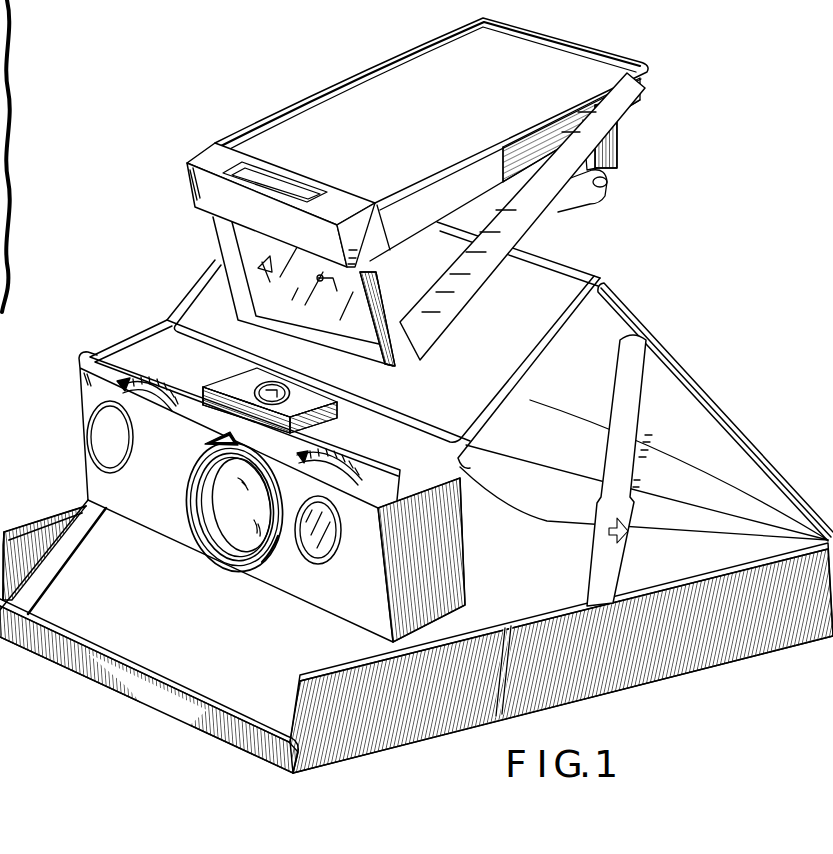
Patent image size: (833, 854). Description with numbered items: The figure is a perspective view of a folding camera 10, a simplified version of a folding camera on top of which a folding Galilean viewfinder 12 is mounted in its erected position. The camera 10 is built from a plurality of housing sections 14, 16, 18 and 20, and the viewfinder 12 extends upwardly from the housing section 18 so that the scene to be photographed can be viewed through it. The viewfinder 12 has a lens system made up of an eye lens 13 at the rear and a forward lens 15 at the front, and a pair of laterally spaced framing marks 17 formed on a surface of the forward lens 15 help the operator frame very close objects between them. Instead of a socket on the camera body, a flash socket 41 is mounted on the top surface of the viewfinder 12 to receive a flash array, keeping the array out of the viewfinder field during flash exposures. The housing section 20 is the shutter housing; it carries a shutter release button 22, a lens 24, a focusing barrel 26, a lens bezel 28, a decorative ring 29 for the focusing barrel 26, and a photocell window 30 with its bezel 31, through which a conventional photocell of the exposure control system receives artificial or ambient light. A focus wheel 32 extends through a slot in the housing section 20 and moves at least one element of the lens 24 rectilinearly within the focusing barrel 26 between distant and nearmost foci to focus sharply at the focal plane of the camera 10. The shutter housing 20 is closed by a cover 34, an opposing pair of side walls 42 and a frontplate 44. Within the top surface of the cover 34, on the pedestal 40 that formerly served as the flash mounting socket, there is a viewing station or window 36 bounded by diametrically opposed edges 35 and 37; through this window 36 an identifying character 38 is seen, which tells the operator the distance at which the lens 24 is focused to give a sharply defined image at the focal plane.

The folding camera 10 is at (739, 402).
The folding Galilean viewfinder 12 is at (417, 140).
The eye lens 13 is at (586, 153).
The housing section 14 is at (672, 336).
The forward lens 15 is at (263, 258).
The housing section 16 is at (657, 670).
The framing marks 17 is at (337, 275).
The housing section 18 is at (204, 270).
The shutter housing 20 is at (88, 482).
The shutter release button 22 is at (108, 440).
The lens 24 is at (243, 490).
The focusing barrel 26 is at (234, 568).
The lens bezel 28 is at (213, 513).
The decorative ring 29 is at (277, 557).
The photocell window 30 is at (330, 537).
The bezel 31 is at (301, 513).
The focus wheel 32 is at (150, 406).
The cover 34 is at (392, 455).
The edge 35 is at (253, 386).
The viewing station or window 36 is at (300, 405).
The edge 37 is at (293, 385).
The identifying character 38 is at (271, 384).
The pedestal 40 is at (250, 388).
The flash socket 41 is at (280, 183).
The side walls 42 is at (456, 560).
The frontplate 44 is at (343, 603).